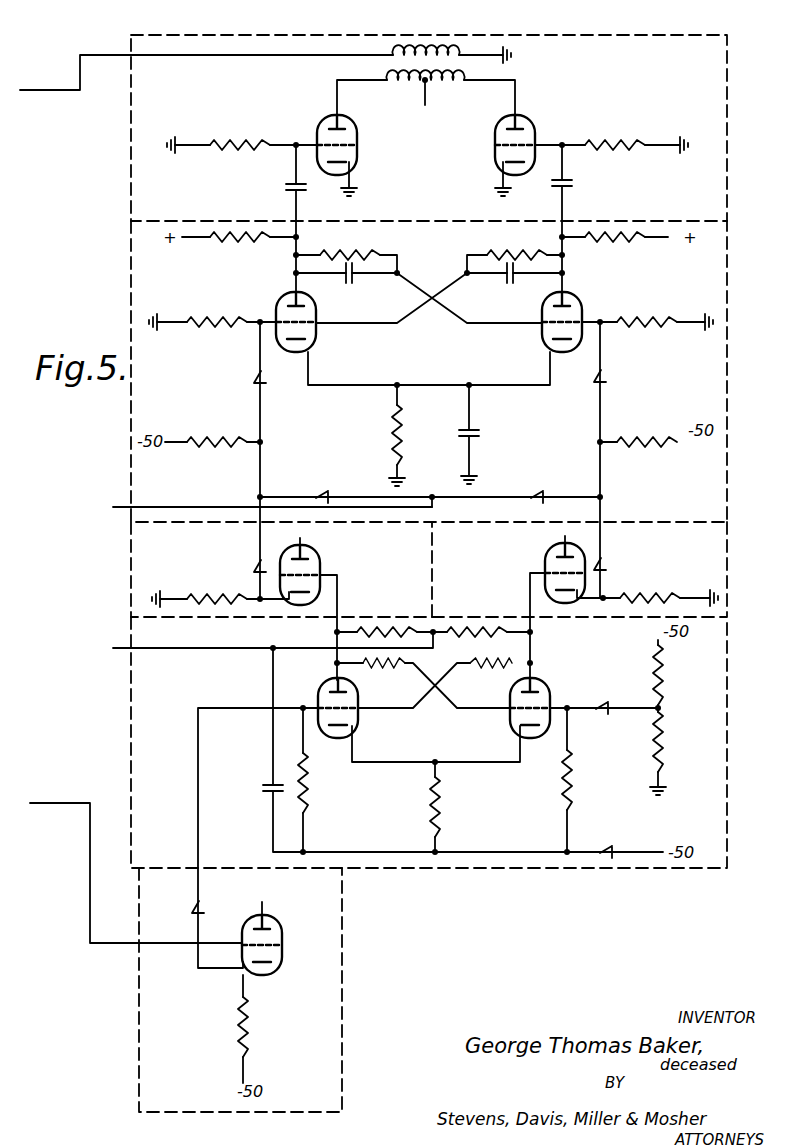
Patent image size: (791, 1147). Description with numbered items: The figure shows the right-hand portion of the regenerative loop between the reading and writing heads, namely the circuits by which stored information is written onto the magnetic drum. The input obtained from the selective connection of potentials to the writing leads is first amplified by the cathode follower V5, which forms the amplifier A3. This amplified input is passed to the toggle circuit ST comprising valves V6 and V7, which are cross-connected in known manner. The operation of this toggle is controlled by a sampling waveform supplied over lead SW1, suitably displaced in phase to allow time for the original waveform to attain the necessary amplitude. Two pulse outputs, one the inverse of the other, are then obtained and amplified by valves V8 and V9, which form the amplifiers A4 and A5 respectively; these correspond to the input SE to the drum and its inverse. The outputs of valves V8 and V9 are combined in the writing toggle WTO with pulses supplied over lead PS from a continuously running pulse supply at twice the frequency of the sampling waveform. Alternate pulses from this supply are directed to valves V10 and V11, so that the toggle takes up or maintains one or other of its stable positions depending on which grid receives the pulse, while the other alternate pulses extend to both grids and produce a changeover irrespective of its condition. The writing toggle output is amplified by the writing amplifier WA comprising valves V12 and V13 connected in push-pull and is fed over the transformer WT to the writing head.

The cathode follower V5 is at (275, 927).
The valve V6 is at (329, 704).
The valve V7 is at (541, 704).
The valve V8 is at (311, 564).
The valve V9 is at (551, 563).
The valve V10 is at (286, 314).
The valve V11 is at (576, 314).
The valve V12 is at (322, 149).
The valve V13 is at (528, 149).
The transformer WT is at (426, 84).
The writing amplifier WA is at (429, 128).
The writing toggle WTO is at (429, 371).
The lead PS is at (271, 497).
The input to the drum SE is at (634, 584).
The amplifier A3 is at (240, 990).
The amplifier A4 is at (281, 569).
The amplifier A5 is at (579, 569).
The lead SW1 is at (268, 637).
The toggle circuit ST is at (429, 742).